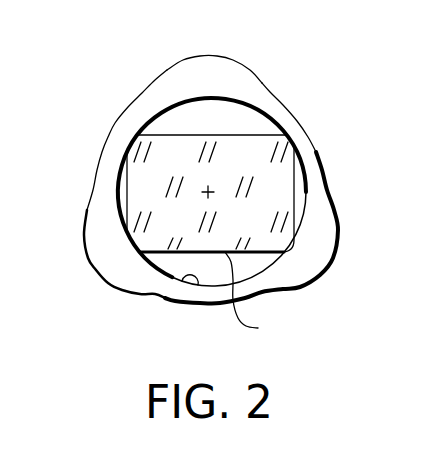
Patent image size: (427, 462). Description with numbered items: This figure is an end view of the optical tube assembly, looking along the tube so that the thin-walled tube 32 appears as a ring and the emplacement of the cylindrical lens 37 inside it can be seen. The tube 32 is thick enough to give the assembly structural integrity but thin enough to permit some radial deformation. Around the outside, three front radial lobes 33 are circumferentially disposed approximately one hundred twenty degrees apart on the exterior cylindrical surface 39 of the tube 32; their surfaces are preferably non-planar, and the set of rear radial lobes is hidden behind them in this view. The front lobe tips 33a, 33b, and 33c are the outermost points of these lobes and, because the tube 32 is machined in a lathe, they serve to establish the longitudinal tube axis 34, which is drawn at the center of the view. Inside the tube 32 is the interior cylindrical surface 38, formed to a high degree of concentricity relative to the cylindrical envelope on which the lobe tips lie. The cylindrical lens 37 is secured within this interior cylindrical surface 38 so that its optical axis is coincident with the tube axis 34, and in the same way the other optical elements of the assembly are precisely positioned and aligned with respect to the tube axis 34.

The tube 32 is at (259, 94).
The front radial lobes 33 is at (168, 70).
The front lobe tip 33a is at (197, 56).
The front lobe tip 33b is at (98, 274).
The front lobe tip 33c is at (335, 258).
The longitudinal tube axis 34 is at (211, 188).
The cylindrical lens 37 is at (255, 295).
The interior cylindrical surface 38 is at (180, 280).
The exterior cylindrical surface 39 is at (109, 139).